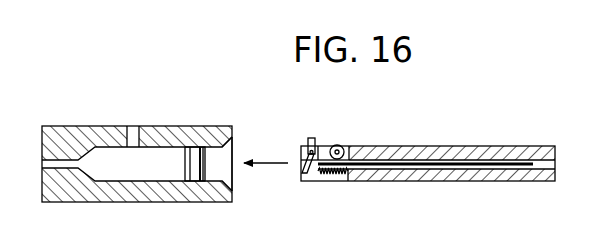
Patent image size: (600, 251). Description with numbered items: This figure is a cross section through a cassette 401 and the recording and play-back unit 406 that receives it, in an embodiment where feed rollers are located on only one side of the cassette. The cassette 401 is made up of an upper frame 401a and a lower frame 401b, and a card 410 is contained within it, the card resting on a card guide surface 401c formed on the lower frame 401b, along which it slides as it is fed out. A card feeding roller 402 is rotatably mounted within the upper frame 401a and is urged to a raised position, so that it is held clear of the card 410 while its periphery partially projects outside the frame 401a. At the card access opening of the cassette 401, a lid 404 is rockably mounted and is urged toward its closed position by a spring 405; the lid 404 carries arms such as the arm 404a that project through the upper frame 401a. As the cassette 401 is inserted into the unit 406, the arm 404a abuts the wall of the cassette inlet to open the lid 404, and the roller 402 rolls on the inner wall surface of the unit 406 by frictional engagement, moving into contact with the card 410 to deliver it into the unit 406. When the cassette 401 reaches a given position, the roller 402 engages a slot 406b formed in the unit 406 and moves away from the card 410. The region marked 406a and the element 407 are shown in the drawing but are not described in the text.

The cassette 401 is at (528, 188).
The upper frame 401a is at (471, 147).
The lower frame 401b is at (486, 170).
The card guide surface 401c is at (437, 170).
The card feeding roller 402 is at (343, 148).
The lid 404 is at (304, 171).
The arm 404a is at (313, 138).
The spring 405 is at (333, 177).
The recording and play-back unit 406 is at (101, 207).
The opening of socket block 406a is at (226, 165).
The slot 406b is at (133, 143).
The insert 407 is at (198, 171).
The card 410 is at (408, 167).